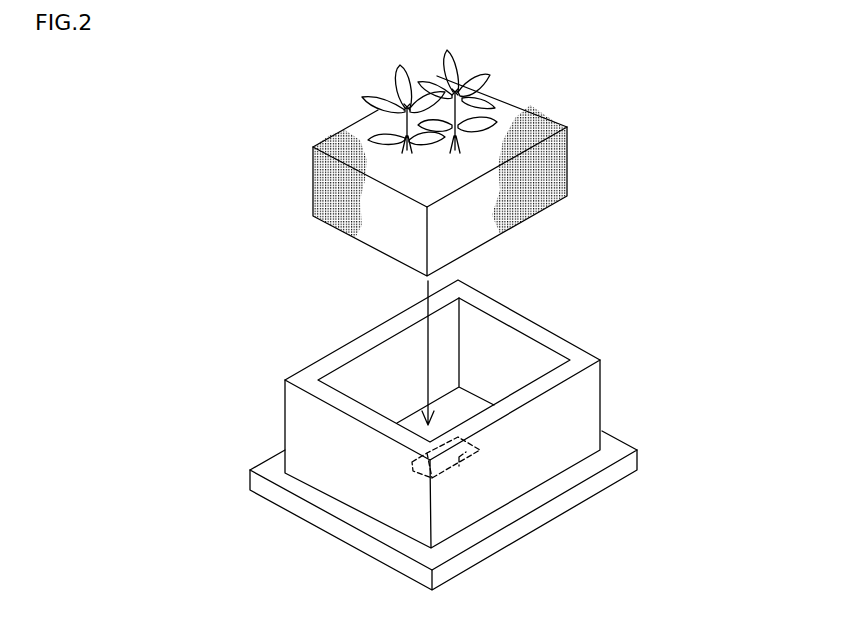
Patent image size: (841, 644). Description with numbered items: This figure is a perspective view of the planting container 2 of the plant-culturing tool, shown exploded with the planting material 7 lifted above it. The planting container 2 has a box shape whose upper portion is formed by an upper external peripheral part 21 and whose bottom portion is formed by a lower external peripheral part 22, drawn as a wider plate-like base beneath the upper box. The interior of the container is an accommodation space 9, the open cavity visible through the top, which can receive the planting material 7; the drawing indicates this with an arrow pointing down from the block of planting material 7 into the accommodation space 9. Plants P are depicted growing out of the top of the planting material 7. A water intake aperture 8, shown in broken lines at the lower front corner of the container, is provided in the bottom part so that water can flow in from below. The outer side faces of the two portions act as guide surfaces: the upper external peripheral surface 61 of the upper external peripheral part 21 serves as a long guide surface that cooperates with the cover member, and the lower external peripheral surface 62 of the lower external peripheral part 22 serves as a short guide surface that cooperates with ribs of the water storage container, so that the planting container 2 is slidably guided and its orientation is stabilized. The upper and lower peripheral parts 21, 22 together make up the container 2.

The planting material 7 is at (568, 167).
The plants P is at (445, 72).
The planting container 2 is at (524, 435).
The upper external peripheral part 21 is at (602, 398).
The lower external peripheral part 22 is at (485, 510).
The accommodation space 9 is at (515, 364).
The water intake aperture 8 is at (420, 468).
The upper external peripheral surface 61 is at (349, 488).
The lower external peripheral surface 62 is at (269, 503).